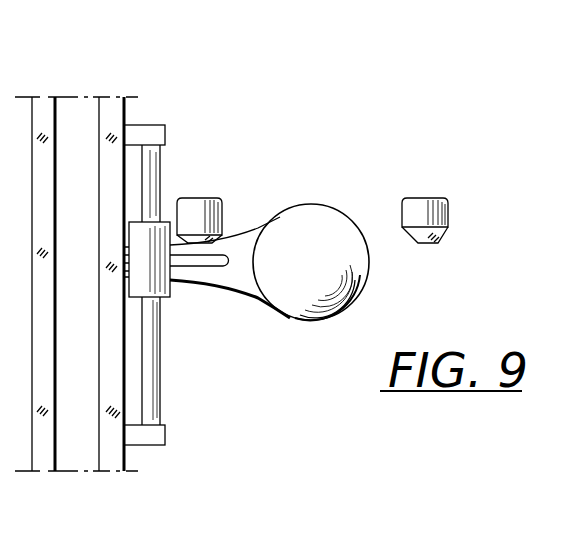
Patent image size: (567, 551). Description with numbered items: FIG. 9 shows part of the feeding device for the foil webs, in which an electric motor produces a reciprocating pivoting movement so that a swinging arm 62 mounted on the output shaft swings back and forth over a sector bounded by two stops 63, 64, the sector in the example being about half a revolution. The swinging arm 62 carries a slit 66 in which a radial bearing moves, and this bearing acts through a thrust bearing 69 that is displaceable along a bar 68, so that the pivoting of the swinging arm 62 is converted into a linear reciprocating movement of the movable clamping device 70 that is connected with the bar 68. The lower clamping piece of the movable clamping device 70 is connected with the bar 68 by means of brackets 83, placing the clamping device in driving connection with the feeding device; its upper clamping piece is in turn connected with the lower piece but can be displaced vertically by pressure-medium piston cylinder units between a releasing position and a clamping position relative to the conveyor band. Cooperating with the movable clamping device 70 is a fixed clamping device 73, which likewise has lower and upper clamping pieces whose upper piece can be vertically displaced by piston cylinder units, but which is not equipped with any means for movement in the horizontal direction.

The swinging arm 62 is at (252, 283).
The stop 63 is at (190, 208).
The stop 64 is at (420, 208).
The slit 66 is at (205, 258).
The bar 68 is at (150, 170).
The thrust bearing 69 is at (153, 272).
The movable clamping device 70 is at (128, 94).
The fixed clamping device 73 is at (44, 93).
The brackets 83 is at (155, 135).